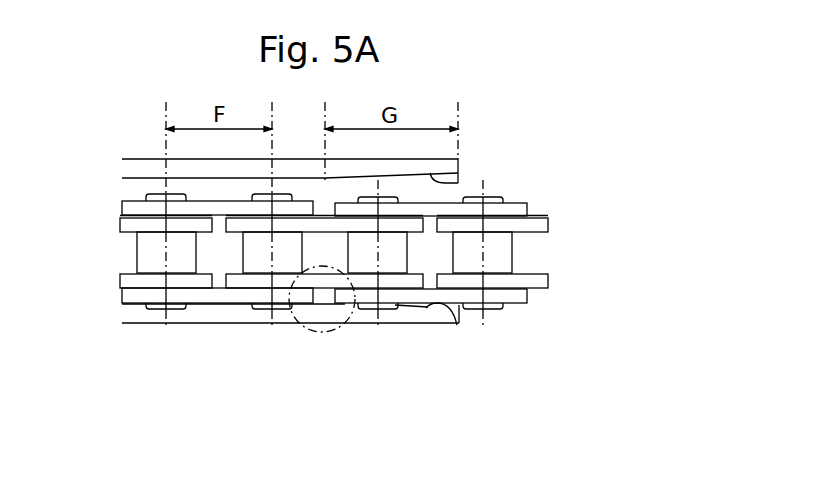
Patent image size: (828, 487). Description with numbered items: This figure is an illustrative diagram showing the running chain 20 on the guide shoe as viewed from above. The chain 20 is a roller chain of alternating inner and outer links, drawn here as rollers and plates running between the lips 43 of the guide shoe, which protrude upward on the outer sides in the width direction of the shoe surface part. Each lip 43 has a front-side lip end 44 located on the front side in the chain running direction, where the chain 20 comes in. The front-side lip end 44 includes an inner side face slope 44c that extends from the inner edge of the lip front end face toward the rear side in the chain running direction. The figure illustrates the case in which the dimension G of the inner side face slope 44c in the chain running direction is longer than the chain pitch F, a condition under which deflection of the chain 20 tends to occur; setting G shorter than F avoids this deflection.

The chain 20 is at (538, 210).
The lip 43 is at (142, 165).
The front-side lip end 44 is at (462, 162).
The inner side face slope 44c is at (458, 183).